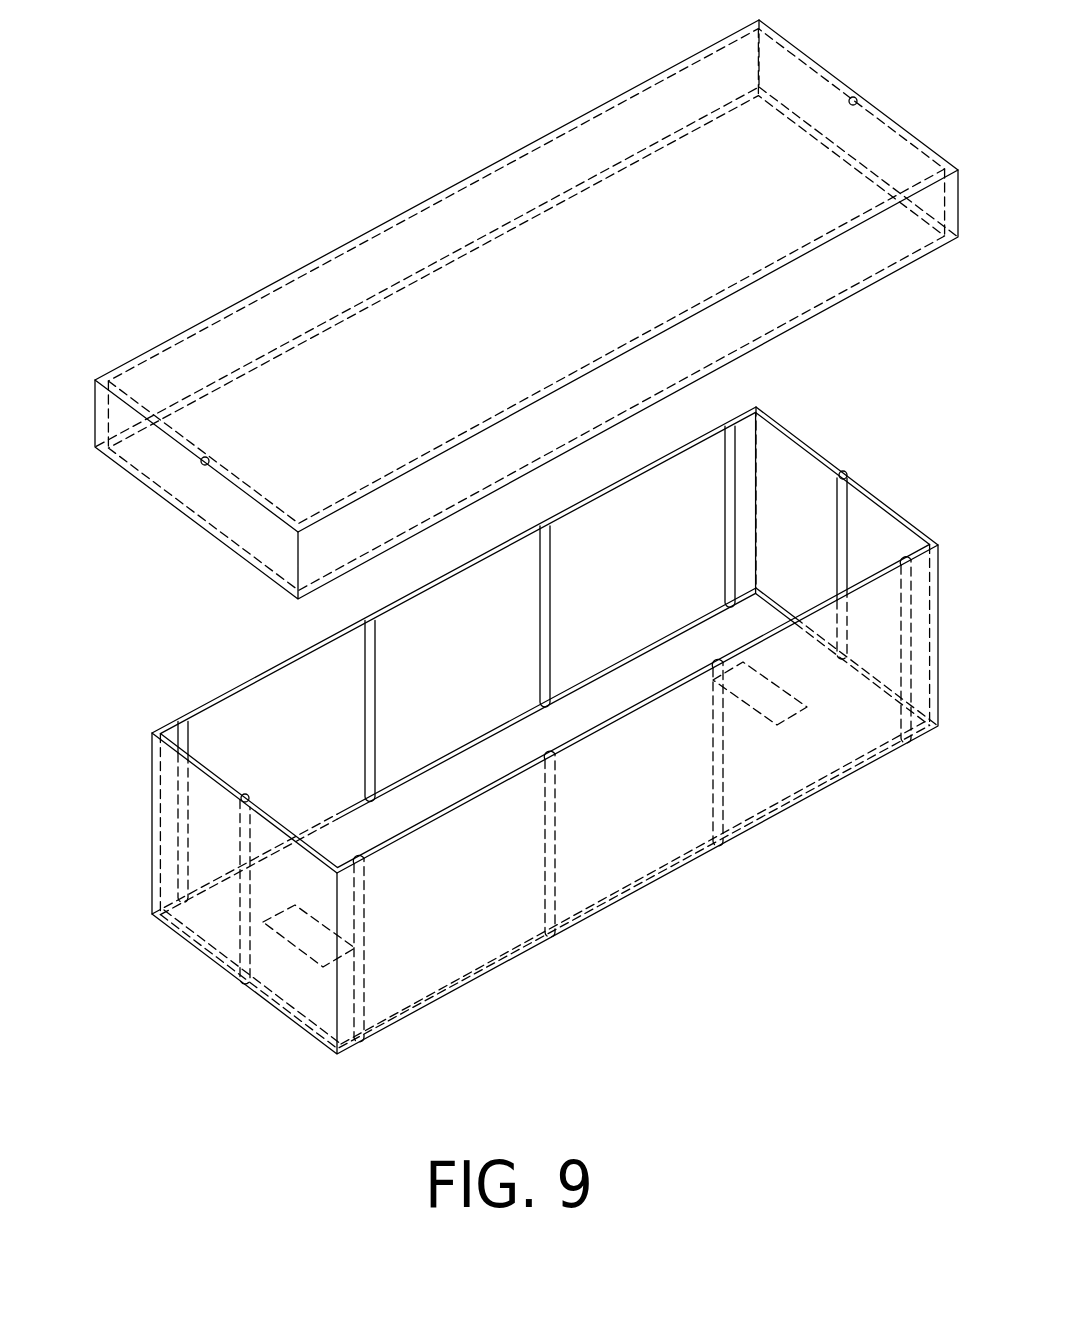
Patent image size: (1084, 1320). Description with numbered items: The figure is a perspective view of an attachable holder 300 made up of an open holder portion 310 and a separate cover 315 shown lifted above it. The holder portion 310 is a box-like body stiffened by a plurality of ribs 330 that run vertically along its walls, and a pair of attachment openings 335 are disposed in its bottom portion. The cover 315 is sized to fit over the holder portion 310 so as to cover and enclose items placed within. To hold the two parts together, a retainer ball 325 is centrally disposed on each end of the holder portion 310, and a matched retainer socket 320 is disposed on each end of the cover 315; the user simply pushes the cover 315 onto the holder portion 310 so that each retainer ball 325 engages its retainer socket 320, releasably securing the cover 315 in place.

The attachable holder 300 is at (210, 164).
The holder portion 310 is at (228, 690).
The cover 315 is at (445, 191).
The retainer socket 320 is at (853, 97).
The retainer ball 325 is at (845, 470).
The rib 330 is at (545, 867).
The attachment opening 335 is at (303, 933).